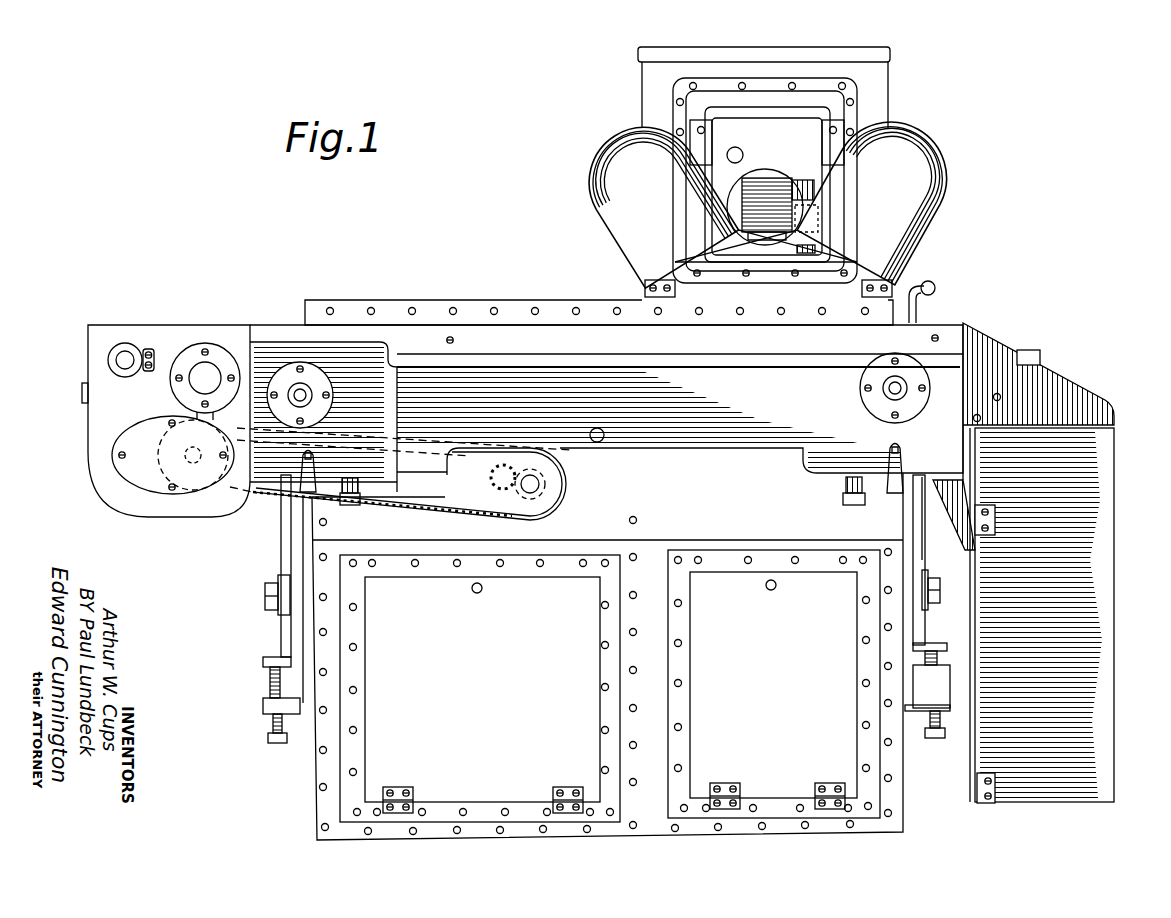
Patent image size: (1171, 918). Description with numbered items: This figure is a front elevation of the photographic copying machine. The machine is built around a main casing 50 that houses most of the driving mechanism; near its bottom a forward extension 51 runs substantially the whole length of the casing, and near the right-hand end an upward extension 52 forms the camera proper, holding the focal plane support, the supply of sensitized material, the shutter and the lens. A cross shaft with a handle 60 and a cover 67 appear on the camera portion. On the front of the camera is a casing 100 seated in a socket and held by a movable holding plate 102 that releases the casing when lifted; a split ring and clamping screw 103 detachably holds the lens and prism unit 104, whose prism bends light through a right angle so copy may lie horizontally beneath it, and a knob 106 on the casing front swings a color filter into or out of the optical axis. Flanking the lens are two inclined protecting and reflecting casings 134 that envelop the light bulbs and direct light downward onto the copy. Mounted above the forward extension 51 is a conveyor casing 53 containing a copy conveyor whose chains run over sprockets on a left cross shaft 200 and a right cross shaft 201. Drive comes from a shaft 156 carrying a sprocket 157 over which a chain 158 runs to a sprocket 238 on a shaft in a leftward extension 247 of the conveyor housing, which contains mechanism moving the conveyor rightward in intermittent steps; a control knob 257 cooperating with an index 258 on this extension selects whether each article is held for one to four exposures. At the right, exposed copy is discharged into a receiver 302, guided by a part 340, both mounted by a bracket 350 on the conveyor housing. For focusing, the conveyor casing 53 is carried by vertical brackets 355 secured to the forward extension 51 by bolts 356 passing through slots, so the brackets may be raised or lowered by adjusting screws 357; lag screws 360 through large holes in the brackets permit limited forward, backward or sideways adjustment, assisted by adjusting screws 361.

The main casing 50 is at (418, 292).
The forward extension 51 is at (585, 545).
The upward extension 52 is at (890, 96).
The conveyor casing 53 is at (606, 399).
The vent pipe 60 is at (935, 286).
The cover cap 67 is at (892, 53).
The camera front casing 100 is at (785, 108).
The movable holding plate 102 is at (706, 133).
The split ring and clamping screw 103 is at (800, 236).
The lens and prism unit 104 is at (778, 188).
The knob 106 is at (742, 153).
The protecting and reflecting casing 134 is at (606, 214).
The shaft 156 is at (532, 484).
The sprocket 157 is at (490, 481).
The chain 158 is at (449, 510).
The cross shaft 200 is at (305, 395).
The cross shaft 201 is at (891, 391).
The sprocket 238 is at (176, 492).
The leftward extension 247 is at (92, 426).
The control knob 257 is at (128, 352).
The index 258 is at (143, 373).
The receiver 302 is at (1130, 464).
The guiding part 340 is at (1070, 388).
The bracket 350 is at (943, 516).
The vertical bracket 355 is at (290, 528).
The bolt 356 is at (265, 590).
The adjusting screw 357 is at (268, 729).
The lag screw 360 is at (349, 507).
The adjusting screw 361 is at (318, 458).